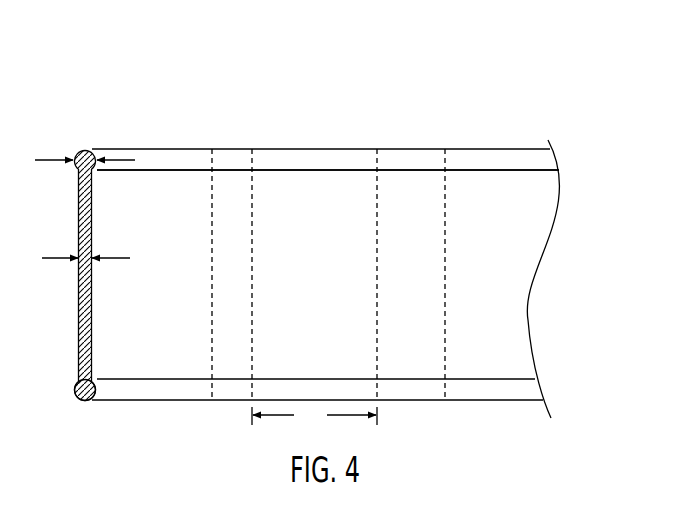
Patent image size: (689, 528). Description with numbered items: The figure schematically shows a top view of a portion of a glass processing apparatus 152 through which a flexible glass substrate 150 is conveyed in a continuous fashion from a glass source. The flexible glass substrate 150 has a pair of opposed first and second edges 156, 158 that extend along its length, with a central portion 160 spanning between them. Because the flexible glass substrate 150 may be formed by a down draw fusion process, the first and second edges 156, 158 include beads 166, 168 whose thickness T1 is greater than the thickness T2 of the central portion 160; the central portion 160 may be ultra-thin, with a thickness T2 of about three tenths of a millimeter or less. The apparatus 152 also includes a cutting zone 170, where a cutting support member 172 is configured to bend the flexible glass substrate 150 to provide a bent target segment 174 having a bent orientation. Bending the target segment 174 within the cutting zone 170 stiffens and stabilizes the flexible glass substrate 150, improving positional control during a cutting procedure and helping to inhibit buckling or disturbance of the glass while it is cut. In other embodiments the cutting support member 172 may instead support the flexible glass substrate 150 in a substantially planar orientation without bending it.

The flexible glass substrate 150 is at (528, 222).
The glass processing apparatus 152 is at (324, 101).
The first edge 156 is at (427, 149).
The second edge 158 is at (482, 400).
The central portion 160 is at (500, 317).
The bead 166 is at (87, 150).
The bead 168 is at (77, 389).
The cutting zone 170 is at (314, 416).
The cutting support member 172 is at (212, 332).
The bent target segment 174 is at (344, 189).
The bead thickness T1 is at (52, 158).
The central portion thickness T2 is at (117, 258).